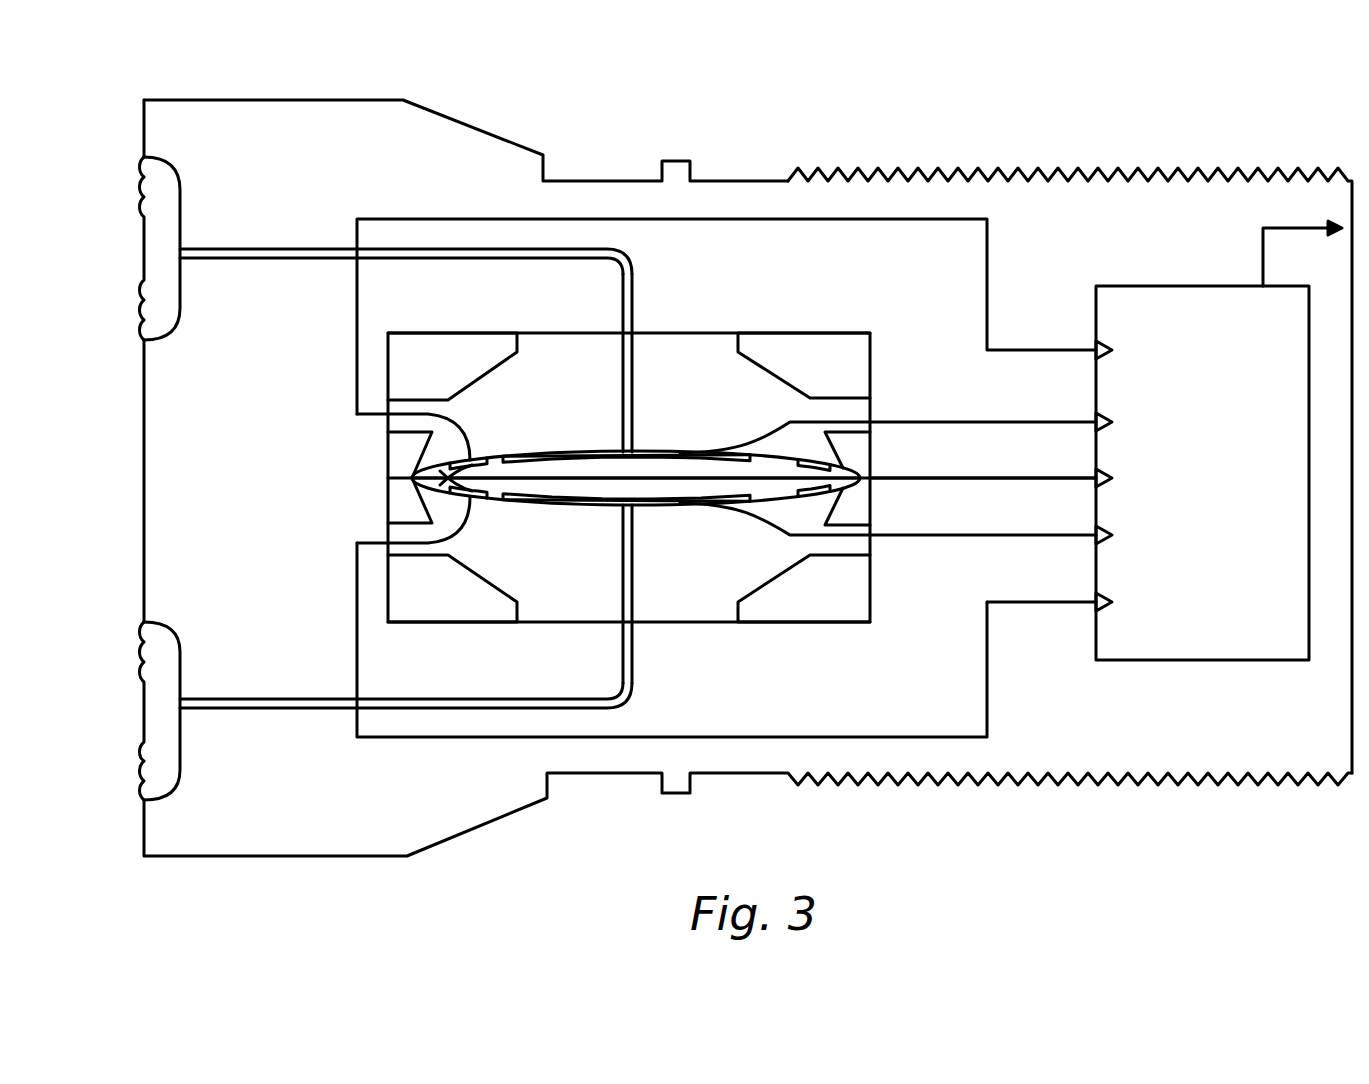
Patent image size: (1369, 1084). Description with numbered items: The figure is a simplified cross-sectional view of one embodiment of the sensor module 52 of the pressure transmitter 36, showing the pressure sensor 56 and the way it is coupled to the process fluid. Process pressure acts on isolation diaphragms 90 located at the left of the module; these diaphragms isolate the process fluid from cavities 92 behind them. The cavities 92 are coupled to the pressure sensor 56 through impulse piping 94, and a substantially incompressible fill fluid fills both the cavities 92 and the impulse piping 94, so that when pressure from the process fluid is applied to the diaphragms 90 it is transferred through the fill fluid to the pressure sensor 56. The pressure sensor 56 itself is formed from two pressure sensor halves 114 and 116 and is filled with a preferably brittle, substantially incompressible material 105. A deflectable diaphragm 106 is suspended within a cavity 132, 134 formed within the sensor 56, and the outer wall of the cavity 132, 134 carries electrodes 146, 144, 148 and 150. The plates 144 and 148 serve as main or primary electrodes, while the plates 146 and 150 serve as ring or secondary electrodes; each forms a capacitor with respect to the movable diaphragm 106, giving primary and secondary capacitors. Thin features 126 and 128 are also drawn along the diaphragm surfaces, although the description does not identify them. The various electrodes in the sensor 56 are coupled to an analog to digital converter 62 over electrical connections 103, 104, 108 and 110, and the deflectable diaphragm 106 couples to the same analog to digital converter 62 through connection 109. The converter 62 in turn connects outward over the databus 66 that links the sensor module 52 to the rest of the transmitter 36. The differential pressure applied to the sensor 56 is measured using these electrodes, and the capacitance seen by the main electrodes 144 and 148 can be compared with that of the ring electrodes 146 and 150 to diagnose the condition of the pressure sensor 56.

The sensor module 52 is at (484, 132).
The pressure transmitter 36 is at (571, 776).
The cavities 92 is at (176, 172).
The isolation diaphragms 90 is at (143, 253).
The impulse piping 94 is at (630, 313).
The electrical connection 103 is at (1055, 348).
The pressure sensor 56 is at (803, 334).
The brittle substantially incompressible material 105 is at (462, 408).
The electrical connection 110 is at (432, 530).
The pressure sensor half 114 is at (872, 374).
The pressure sensor half 116 is at (872, 582).
The diaphragm 106 is at (622, 475).
The cavity 132 is at (637, 467).
The cavity 134 is at (647, 487).
The main electrode 144 is at (598, 452).
The main electrode 148 is at (558, 513).
The upper electrode coating 126 is at (492, 458).
The lower electrode coating 128 is at (480, 495).
The ring electrode 146 is at (474, 462).
The ring electrode 150 is at (473, 497).
The electrical connection 104 is at (712, 435).
The electrical connection 108 is at (712, 523).
The connection 109 is at (997, 475).
The analog to digital converter 62 is at (1309, 382).
The databus 66 is at (1278, 232).